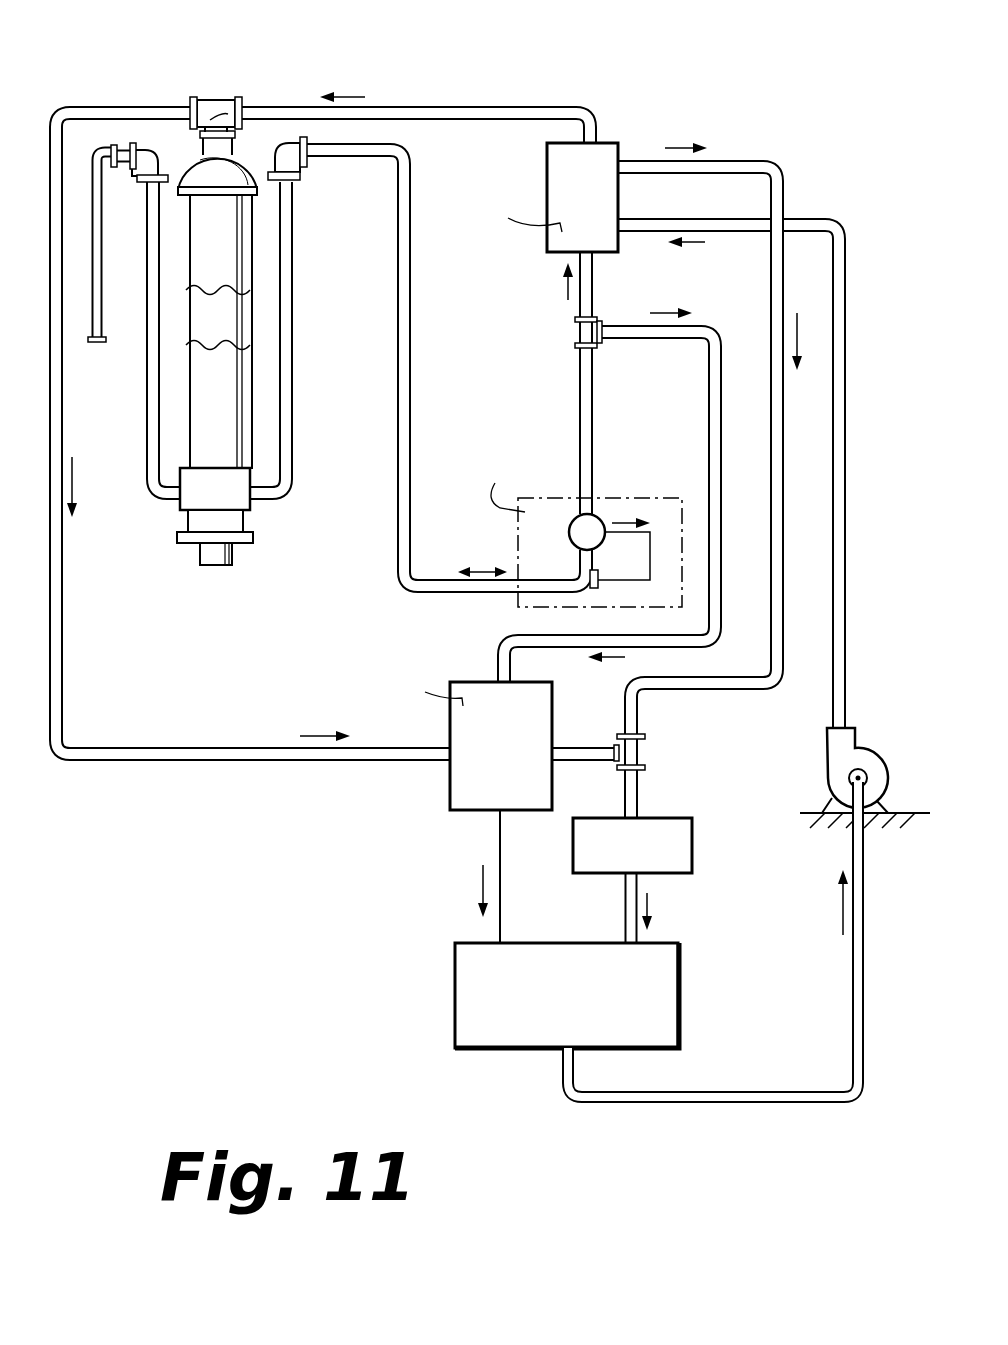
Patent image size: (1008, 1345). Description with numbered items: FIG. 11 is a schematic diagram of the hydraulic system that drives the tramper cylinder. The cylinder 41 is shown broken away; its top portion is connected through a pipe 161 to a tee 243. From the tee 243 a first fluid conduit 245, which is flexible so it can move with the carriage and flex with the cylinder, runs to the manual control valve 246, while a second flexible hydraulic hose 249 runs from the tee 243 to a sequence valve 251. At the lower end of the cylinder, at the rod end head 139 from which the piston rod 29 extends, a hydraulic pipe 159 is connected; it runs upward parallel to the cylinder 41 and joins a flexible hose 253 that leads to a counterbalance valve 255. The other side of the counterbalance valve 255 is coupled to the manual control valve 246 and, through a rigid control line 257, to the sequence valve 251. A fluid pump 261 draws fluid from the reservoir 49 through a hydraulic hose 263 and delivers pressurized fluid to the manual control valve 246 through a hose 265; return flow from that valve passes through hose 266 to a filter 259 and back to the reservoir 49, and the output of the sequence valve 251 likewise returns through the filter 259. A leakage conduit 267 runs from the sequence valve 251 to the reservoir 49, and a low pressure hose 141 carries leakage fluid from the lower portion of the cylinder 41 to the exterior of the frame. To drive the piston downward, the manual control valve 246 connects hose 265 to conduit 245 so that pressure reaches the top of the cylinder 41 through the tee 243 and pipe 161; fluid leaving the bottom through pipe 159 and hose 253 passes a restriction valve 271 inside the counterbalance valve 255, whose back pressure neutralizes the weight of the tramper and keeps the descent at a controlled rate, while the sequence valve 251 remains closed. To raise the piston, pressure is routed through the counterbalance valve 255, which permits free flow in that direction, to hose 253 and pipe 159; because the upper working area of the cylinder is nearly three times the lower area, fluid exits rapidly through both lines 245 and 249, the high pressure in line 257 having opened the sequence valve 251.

The second hydraulic hose 249 is at (120, 107).
The tee 243 is at (230, 100).
The first fluid conduit 245 is at (402, 107).
The manual control valve 246 is at (615, 145).
The hose 266 is at (776, 162).
The pipe 161 is at (222, 122).
The flexible hose 253 is at (410, 300).
The rigid control line 257 is at (710, 410).
The counterbalance valve 255 is at (612, 498).
The restriction valve 271 is at (569, 535).
The low pressure hose 141 is at (147, 423).
The hydraulic pipe 159 is at (293, 440).
The rod end head 139 is at (233, 518).
The shaft 29 is at (232, 556).
The cylinder 41 is at (205, 312).
The sequence valve 251 is at (432, 733).
The leakage conduit 267 is at (500, 878).
The filter 259 is at (672, 873).
The fluid pump 261 is at (866, 752).
The hydraulic fluid reservoir 49 is at (678, 1005).
The hydraulic hose 263 is at (733, 1102).
The hose 265 is at (845, 496).